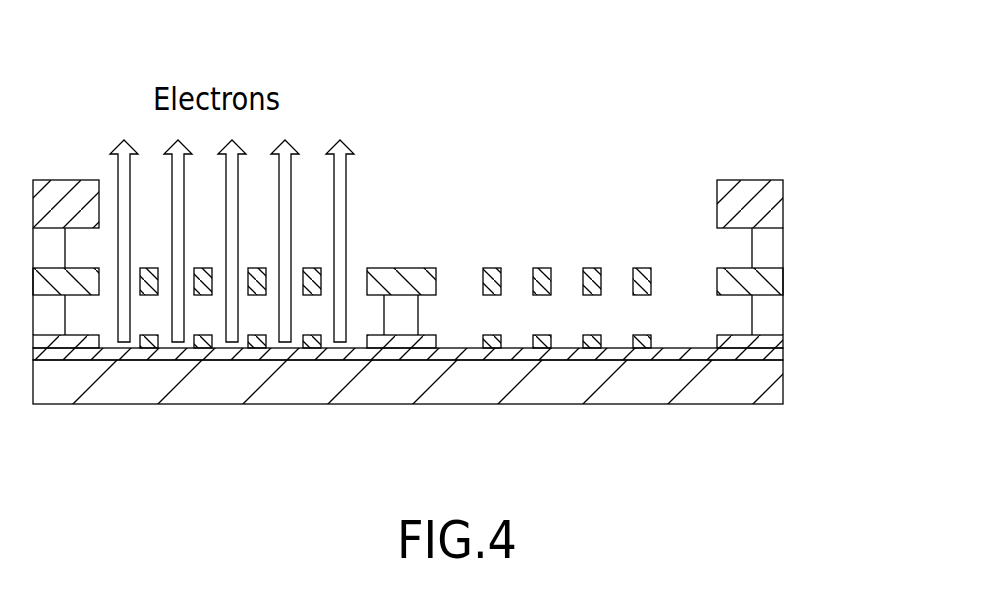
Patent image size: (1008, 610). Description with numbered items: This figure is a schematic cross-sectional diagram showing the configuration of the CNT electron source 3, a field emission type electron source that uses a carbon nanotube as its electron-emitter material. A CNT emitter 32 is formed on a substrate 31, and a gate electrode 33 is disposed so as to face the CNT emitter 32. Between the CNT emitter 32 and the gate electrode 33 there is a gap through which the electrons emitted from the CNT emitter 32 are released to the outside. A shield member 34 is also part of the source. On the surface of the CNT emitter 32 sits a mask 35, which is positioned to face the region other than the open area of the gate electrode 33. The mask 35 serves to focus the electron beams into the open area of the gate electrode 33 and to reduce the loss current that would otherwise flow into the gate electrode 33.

The CNT electron source 3 is at (823, 160).
The substrate 31 is at (715, 392).
The CNT emitter 32 is at (690, 352).
The gate electrode 33 is at (396, 268).
The shield member 34 is at (758, 180).
The mask 35 is at (587, 335).